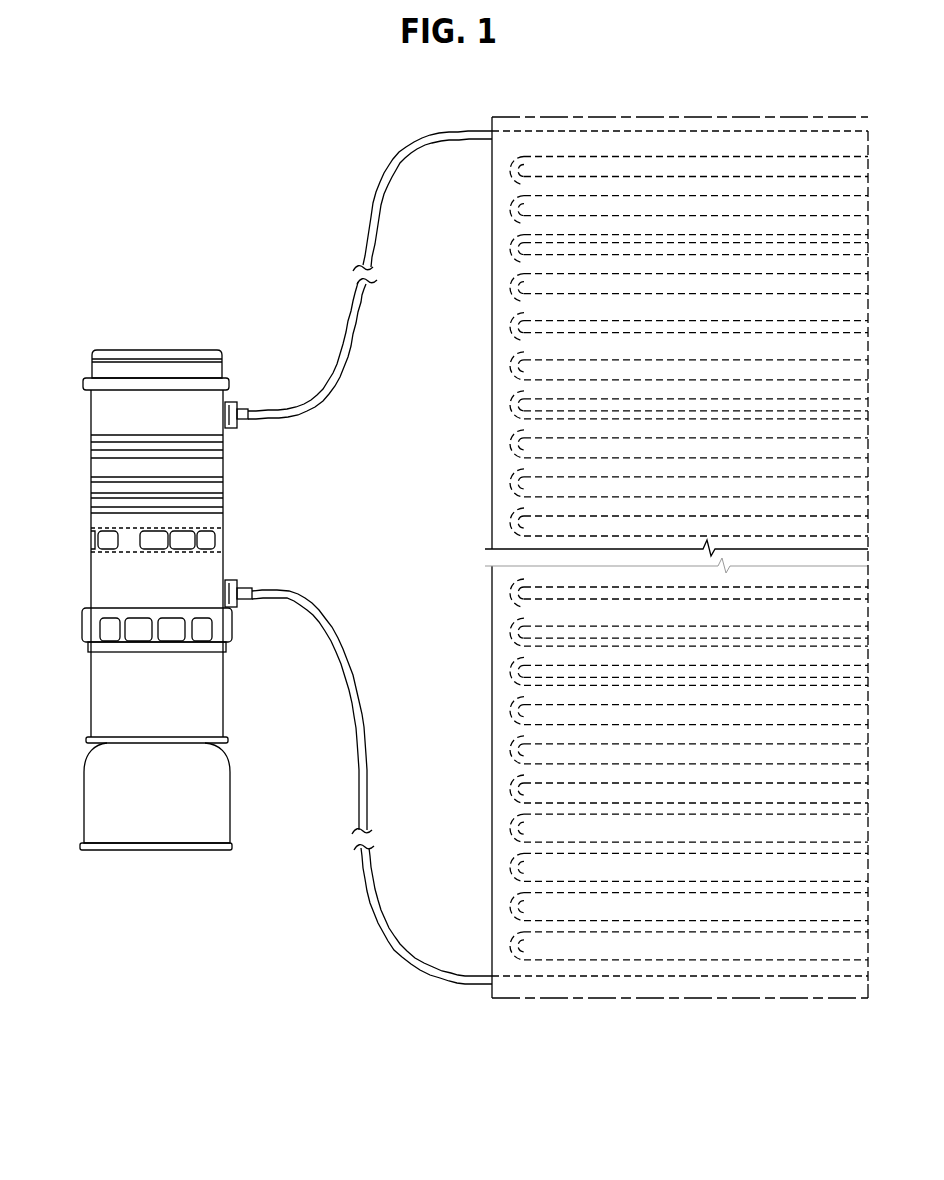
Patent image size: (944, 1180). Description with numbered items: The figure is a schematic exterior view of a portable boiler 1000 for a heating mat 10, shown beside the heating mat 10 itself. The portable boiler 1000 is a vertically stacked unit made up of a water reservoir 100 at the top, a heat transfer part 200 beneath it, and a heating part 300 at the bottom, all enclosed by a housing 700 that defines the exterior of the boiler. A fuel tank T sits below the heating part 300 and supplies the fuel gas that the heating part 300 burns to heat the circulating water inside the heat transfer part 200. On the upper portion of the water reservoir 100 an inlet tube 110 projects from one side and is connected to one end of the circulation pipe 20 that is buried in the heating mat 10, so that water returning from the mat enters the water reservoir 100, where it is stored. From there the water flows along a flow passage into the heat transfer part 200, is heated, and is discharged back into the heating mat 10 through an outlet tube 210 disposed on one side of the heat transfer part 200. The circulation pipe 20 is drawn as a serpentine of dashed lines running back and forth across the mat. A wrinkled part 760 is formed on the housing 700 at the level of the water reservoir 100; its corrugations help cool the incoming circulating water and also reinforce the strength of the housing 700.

The portable boiler 1000 is at (98, 318).
The water reservoir 100 is at (74, 350).
The inlet tube 110 is at (232, 401).
The wrinkled part 760 is at (223, 483).
The heat transfer part 200 is at (74, 513).
The outlet tube 210 is at (237, 580).
The housing 700 is at (230, 681).
The heating part 300 is at (74, 655).
The fuel tank T is at (95, 798).
The heating mat 10 is at (497, 300).
The circulation pipe 20 is at (510, 362).